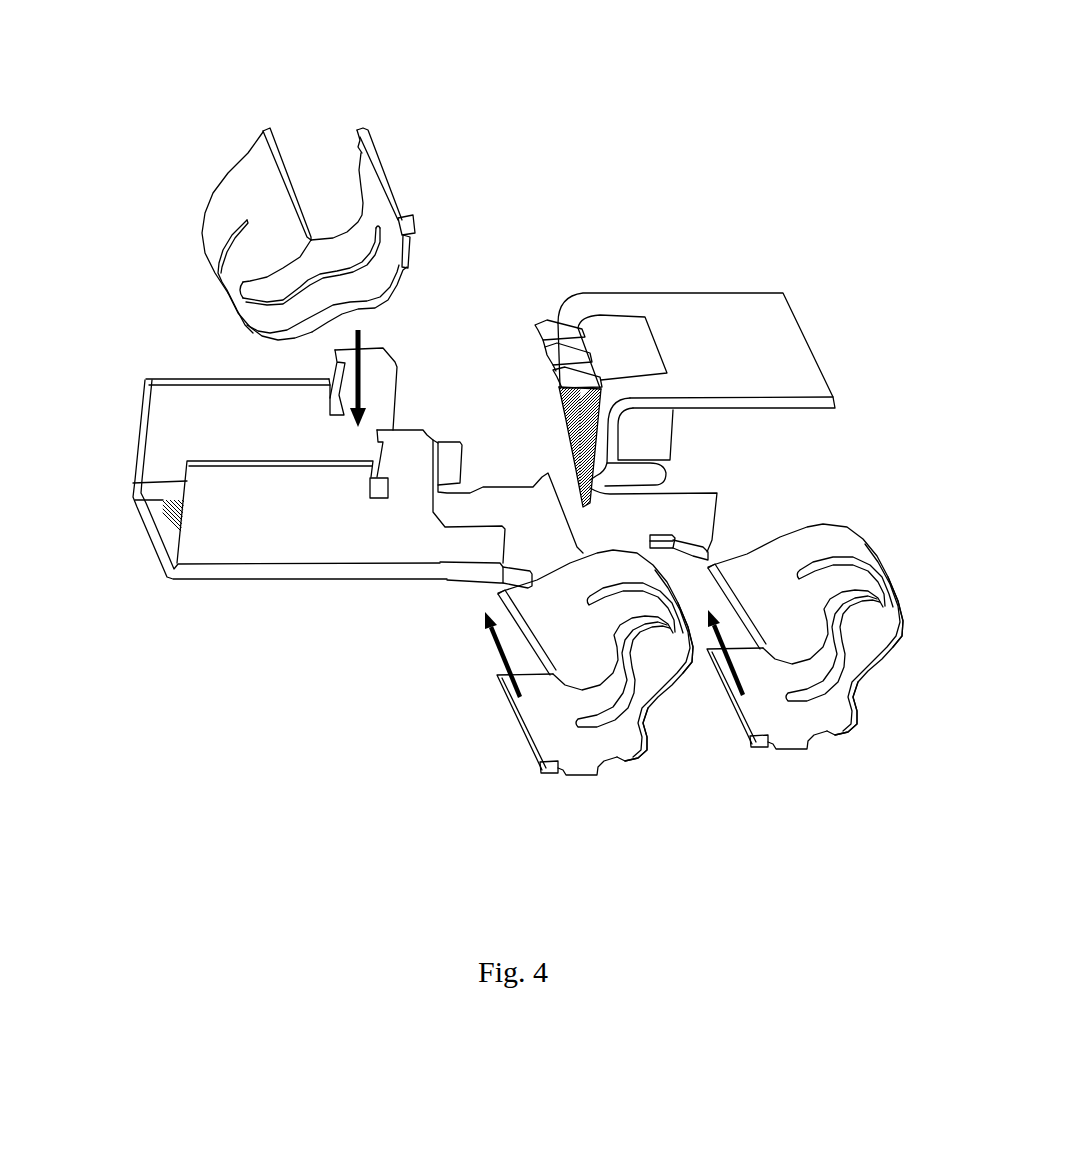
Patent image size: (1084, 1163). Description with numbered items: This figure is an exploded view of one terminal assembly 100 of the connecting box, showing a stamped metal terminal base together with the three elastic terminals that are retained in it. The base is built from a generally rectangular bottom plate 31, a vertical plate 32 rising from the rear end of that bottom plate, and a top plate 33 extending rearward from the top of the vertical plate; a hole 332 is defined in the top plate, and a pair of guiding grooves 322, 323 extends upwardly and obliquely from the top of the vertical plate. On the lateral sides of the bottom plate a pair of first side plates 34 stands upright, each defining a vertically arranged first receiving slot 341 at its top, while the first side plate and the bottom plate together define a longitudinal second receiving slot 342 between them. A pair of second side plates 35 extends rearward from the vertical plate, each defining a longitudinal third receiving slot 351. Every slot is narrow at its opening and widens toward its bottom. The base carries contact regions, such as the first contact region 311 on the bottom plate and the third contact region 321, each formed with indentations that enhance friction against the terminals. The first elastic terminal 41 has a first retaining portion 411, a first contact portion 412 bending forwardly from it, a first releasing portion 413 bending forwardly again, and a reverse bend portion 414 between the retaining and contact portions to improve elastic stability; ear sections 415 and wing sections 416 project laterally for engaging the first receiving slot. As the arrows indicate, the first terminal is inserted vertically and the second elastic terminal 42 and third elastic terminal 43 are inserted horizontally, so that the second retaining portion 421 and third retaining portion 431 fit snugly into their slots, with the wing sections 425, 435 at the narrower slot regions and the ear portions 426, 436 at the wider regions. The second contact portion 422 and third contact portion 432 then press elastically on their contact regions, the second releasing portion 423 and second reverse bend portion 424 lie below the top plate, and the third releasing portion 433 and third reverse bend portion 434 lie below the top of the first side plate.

The card connector assembly 100 is at (850, 40).
The bottom plate 31 is at (147, 547).
The first contact region 311 is at (167, 502).
The vertical plate 32 is at (618, 438).
The third contact region 321 is at (560, 427).
The guiding groove 322 is at (580, 340).
The guiding groove 323 is at (547, 350).
The top plate 33 is at (688, 337).
The hole 332 is at (641, 318).
The first side plate 34 is at (158, 385).
The first receiving slot 341 is at (378, 475).
The second receiving slot 342 is at (442, 574).
The second side plate 35 is at (690, 510).
The third receiving slot 351 is at (673, 542).
The first elastic terminal 41 is at (237, 187).
The first retaining portion 411 is at (366, 175).
The first contact portion 412 is at (243, 327).
The first releasing portion 413 is at (263, 133).
The clip inner valley 414 is at (320, 243).
The ear section 415 is at (410, 252).
The wing section 416 is at (356, 128).
The second elastic terminal 42 is at (777, 557).
The second retaining portion 421 is at (785, 723).
The second contact portion 422 is at (897, 618).
The second releasing portion 423 is at (733, 603).
The second reverse bend portion 424 is at (870, 682).
The wing section 425 is at (797, 747).
The ear portion 426 is at (758, 748).
The third elastic terminal 43 is at (622, 760).
The third retaining portion 431 is at (542, 727).
The third contact portion 432 is at (688, 664).
The third releasing portion 433 is at (520, 642).
The third reverse bend portion 434 is at (650, 723).
The wing section 435 is at (580, 775).
The ear portion 436 is at (547, 773).